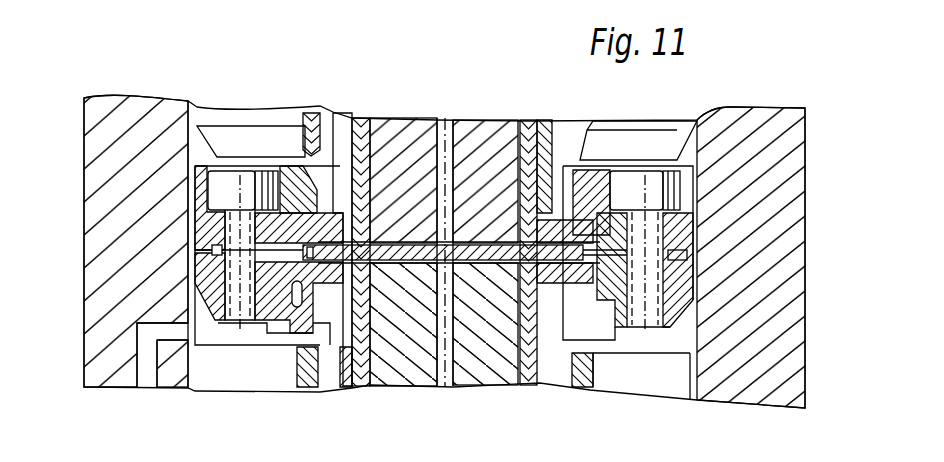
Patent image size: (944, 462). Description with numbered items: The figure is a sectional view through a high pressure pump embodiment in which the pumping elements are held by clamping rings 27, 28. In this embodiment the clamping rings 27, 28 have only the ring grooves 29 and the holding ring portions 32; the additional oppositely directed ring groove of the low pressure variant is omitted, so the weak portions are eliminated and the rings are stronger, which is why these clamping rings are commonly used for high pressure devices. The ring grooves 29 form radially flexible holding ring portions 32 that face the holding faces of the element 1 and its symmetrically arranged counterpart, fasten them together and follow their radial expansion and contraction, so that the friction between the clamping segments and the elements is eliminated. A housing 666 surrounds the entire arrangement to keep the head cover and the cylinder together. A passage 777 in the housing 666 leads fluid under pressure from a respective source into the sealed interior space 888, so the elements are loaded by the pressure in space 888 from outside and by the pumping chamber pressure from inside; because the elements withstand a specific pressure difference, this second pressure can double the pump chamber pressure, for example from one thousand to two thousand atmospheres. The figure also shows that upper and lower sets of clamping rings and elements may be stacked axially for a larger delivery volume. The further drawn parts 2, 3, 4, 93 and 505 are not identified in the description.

The element 1 is at (322, 217).
The threaded sleeve 2 is at (345, 120).
The threaded sleeve 3 is at (357, 373).
The hub block 4 is at (382, 355).
The clamping ring 27 is at (213, 222).
The clamping ring 28 is at (240, 143).
The ring groove 29 is at (290, 203).
The holding ring portion 32 is at (312, 183).
The body block 93 is at (372, 228).
The hub block 505 is at (423, 373).
The housing 666 is at (131, 118).
The passage 777 is at (147, 375).
The interior space 888 is at (233, 337).